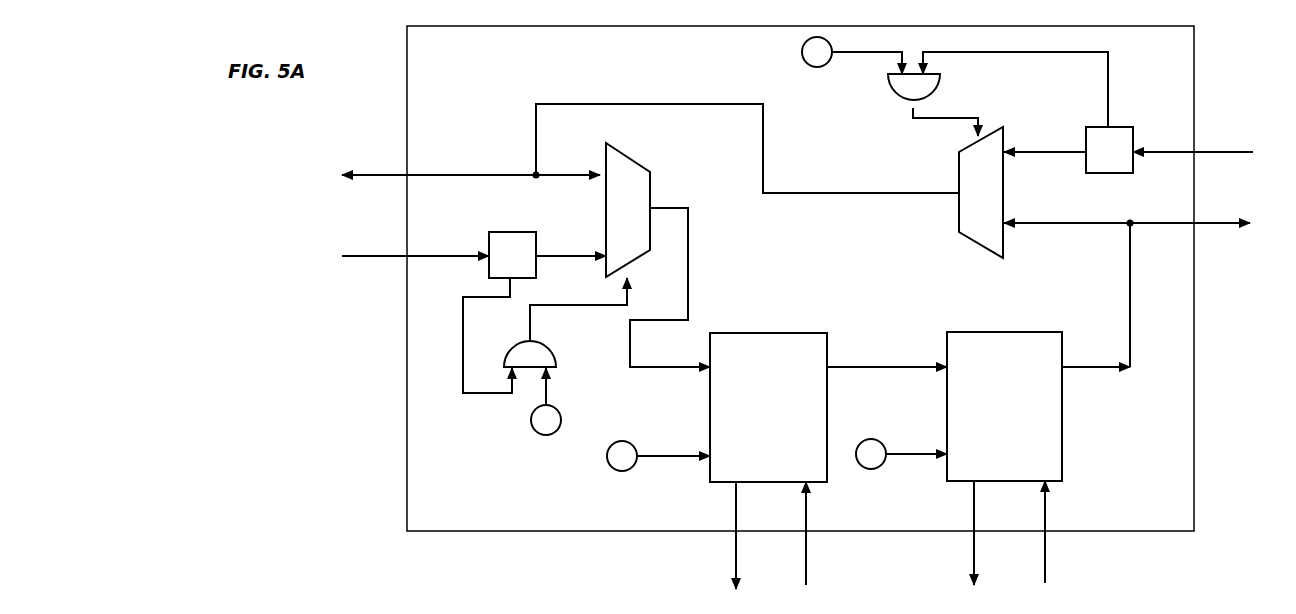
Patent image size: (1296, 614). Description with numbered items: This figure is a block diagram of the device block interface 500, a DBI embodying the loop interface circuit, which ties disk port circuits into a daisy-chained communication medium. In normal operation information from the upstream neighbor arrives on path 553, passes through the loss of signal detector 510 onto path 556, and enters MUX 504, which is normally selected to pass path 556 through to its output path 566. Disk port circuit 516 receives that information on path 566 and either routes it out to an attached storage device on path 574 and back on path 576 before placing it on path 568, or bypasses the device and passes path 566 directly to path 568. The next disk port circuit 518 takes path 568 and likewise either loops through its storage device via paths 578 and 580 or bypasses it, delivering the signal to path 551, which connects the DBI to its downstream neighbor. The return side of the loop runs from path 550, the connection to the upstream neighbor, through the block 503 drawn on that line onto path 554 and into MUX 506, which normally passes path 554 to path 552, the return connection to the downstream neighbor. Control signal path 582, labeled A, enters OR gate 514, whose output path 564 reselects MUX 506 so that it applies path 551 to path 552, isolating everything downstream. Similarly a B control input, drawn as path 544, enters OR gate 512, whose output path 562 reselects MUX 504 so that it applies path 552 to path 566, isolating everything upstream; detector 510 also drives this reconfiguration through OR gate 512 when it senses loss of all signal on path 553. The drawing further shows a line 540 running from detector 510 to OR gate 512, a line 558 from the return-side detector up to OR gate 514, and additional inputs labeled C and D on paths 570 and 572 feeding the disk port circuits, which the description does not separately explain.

The device block interface 500 is at (407, 441).
The filter block 503 is at (1128, 125).
The MUX 504 is at (636, 157).
The MUX 506 is at (975, 247).
The loss of signal detector 510 is at (510, 232).
The OR gate 512 is at (508, 350).
The OR gate 514 is at (942, 82).
The disk port circuit 516 is at (805, 333).
The disk port circuit 518 is at (1063, 432).
The feedback signal line 540 is at (462, 352).
The input signal B line 544 is at (550, 386).
The path 550 is at (1224, 146).
The path 551 is at (1228, 230).
The path 552 is at (380, 170).
The path 553 is at (370, 270).
The path 554 is at (1040, 155).
The path 556 is at (564, 250).
The signal line 558 is at (1057, 55).
The path 562 is at (582, 306).
The path 564 is at (932, 123).
The path 566 is at (690, 236).
The path 568 is at (890, 360).
The input signal C line 570 is at (676, 462).
The input signal D line 572 is at (910, 445).
The path 574 is at (734, 550).
The path 576 is at (810, 544).
The path 578 is at (972, 544).
The path 580 is at (1048, 544).
The path 582 is at (858, 57).